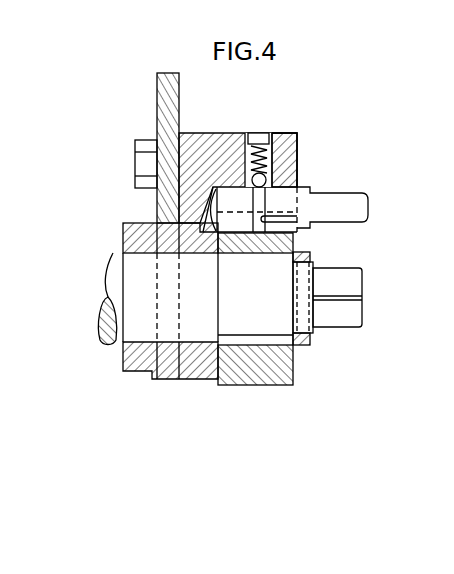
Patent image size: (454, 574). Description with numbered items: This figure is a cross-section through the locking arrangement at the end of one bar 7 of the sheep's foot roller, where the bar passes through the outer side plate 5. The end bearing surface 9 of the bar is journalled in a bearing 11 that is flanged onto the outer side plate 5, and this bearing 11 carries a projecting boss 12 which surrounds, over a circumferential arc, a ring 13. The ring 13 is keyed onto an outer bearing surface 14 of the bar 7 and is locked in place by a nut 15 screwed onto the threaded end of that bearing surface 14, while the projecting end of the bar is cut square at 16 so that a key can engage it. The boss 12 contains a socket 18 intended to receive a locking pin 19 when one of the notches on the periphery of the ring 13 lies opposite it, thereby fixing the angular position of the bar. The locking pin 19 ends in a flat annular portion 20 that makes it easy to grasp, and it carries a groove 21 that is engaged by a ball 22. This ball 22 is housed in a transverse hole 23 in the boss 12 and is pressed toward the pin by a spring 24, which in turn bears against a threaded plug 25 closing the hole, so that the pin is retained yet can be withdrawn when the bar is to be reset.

The outer side plate 5 is at (165, 85).
The bar 7 is at (122, 250).
The end bearing surface 9 is at (132, 270).
The bearing 11 is at (184, 234).
The projecting boss 12 is at (266, 178).
The ring 13 is at (295, 382).
The outer bearing surface 14 is at (312, 258).
The nut 15 is at (312, 345).
The square-cut end 16 is at (355, 283).
The socket 18 is at (216, 142).
The locking pin 19 is at (280, 204).
The flat annular portion 20 is at (350, 204).
The groove 21 is at (300, 226).
The ball 22 is at (287, 163).
The transverse hole 23 is at (297, 137).
The spring 24 is at (270, 148).
The threaded plug 25 is at (267, 137).